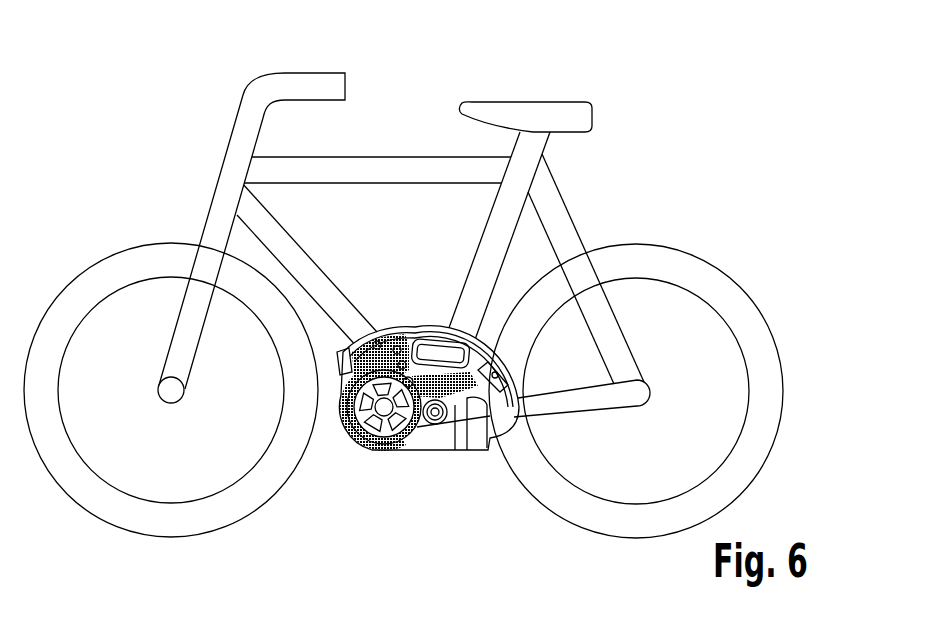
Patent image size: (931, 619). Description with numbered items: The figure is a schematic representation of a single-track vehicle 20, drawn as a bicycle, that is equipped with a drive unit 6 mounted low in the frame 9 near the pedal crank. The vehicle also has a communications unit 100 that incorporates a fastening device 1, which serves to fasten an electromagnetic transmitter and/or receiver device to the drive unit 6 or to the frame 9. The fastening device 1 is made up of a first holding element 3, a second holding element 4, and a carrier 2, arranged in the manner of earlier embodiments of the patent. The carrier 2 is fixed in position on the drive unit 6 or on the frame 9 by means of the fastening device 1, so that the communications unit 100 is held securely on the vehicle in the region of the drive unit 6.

The single-track vehicle 20 is at (160, 98).
The fastening device 1 is at (441, 332).
The carrier 2 is at (433, 371).
The communications unit 100 is at (433, 371).
The frame 9 is at (394, 326).
The first holding element 3 is at (400, 327).
The second holding element 4 is at (493, 350).
The drive unit 6 is at (453, 424).